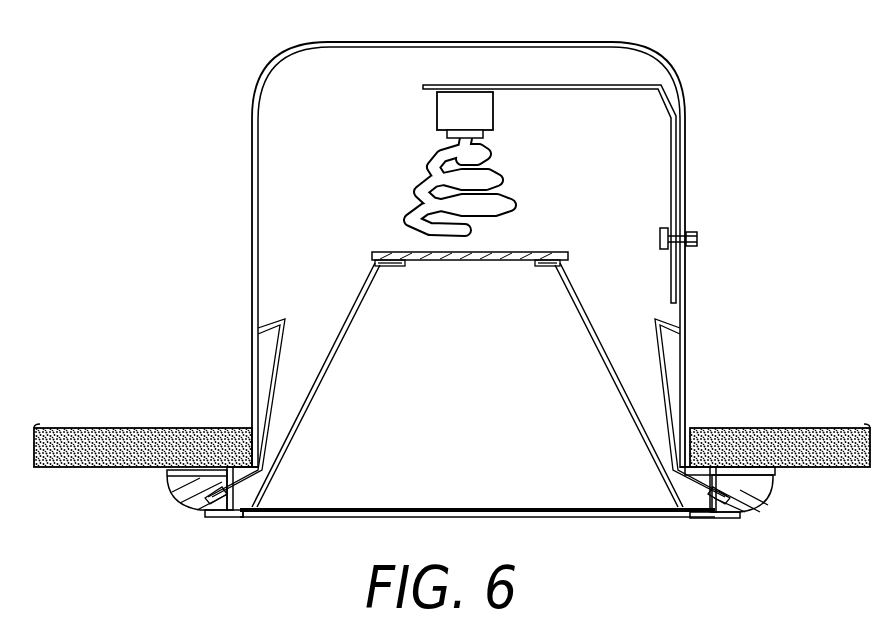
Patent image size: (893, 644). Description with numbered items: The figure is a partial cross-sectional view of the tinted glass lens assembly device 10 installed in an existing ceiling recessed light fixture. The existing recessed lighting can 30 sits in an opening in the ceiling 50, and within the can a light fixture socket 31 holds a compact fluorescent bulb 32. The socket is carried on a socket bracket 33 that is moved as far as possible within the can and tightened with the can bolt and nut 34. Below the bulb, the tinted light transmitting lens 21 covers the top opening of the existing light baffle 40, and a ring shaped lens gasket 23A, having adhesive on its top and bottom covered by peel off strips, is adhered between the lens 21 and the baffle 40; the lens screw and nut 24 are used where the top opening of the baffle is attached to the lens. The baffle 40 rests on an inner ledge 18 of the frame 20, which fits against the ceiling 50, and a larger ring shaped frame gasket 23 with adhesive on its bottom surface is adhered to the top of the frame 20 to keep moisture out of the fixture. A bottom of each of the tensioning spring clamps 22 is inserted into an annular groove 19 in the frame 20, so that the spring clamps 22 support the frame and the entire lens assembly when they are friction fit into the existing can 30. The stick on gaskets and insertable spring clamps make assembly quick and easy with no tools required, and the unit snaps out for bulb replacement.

The tinted lens and frame assembly 10 is at (158, 501).
The inner ledge 18 is at (242, 518).
The annular groove 19 is at (192, 508).
The frame 20 is at (765, 503).
The tinted light transmitting lens 21 is at (447, 262).
The tensioning spring hooks 22 is at (262, 332).
The frame gasket 23 is at (775, 470).
The lens gasket 23A is at (528, 263).
The lens screw and nut 24 is at (755, 384).
The recessed lighting can 30 is at (252, 150).
The light fixture socket 31 is at (493, 105).
The compact fluorescent bulb 32 is at (410, 206).
The socket bracket 33 is at (617, 90).
The can bolt and nut 34 is at (662, 250).
The light baffle 40 is at (657, 450).
The ceiling 50 is at (182, 428).